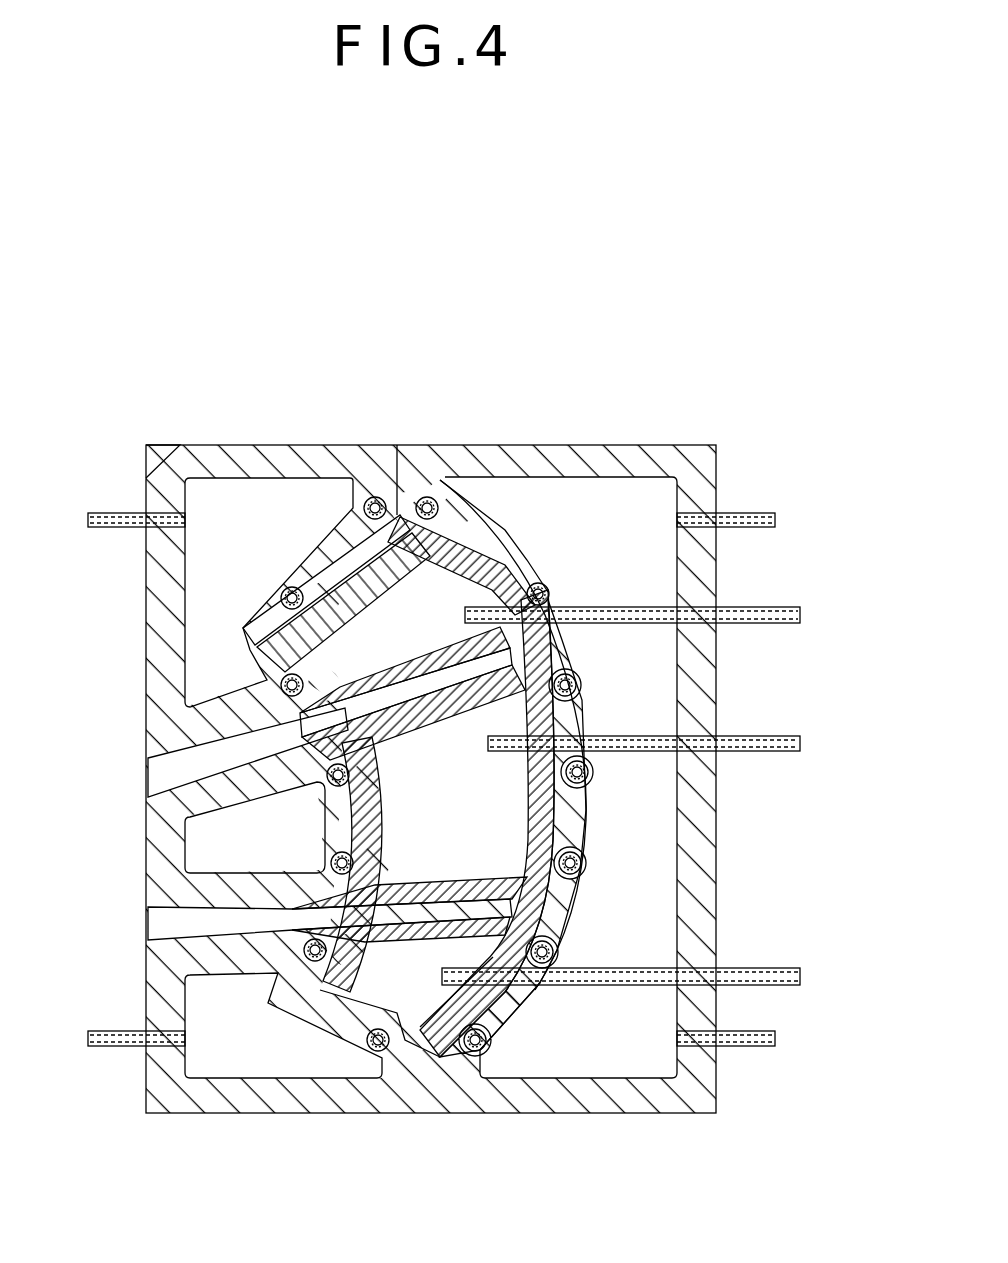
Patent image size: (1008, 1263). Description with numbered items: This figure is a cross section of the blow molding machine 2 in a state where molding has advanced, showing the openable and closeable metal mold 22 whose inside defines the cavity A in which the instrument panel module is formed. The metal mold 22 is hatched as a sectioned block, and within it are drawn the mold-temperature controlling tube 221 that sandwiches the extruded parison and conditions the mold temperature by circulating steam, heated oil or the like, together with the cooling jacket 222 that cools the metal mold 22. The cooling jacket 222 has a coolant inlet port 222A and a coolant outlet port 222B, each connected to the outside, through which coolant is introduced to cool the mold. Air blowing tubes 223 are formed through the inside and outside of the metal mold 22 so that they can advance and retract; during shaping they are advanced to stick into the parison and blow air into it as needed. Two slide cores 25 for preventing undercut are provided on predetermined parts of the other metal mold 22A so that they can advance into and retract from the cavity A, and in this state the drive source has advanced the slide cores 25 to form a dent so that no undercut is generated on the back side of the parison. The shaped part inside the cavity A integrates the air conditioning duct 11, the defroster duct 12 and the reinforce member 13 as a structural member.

The blow molding machine 2 is at (627, 365).
The metal mold 22 is at (655, 443).
The other metal mold 22A is at (157, 445).
The cooling jacket 222 is at (234, 492).
The coolant inlet port 222A is at (106, 1047).
The coolant outlet port 222B is at (102, 512).
The mold-temperature controlling tube 221 is at (372, 496).
The air blowing tube 223 is at (790, 735).
The defroster duct 12 is at (460, 550).
The air conditioning duct 11 is at (425, 1080).
The reinforce member 13 is at (327, 828).
The slide core 25 is at (442, 680).
The cavity A is at (540, 708).